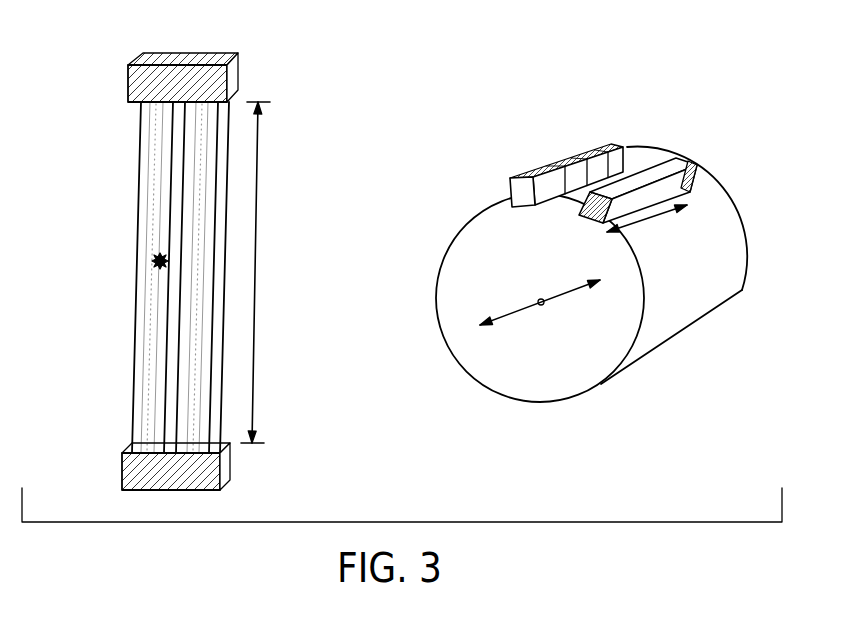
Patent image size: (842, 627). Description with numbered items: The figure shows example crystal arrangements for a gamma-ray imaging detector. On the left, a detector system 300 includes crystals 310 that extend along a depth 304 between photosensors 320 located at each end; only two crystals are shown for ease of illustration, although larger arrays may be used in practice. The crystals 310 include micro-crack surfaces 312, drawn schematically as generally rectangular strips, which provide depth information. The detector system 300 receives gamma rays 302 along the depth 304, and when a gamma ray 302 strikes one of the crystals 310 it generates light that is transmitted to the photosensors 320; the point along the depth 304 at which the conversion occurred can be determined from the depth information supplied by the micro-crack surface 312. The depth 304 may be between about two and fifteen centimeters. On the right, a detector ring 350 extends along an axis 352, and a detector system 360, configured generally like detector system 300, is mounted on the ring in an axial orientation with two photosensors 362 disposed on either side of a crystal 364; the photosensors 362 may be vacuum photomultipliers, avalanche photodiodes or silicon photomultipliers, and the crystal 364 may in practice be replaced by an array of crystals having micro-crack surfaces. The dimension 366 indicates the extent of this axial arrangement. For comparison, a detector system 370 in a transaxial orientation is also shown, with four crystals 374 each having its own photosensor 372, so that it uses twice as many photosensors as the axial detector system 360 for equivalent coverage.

The detector system 300 is at (179, 271).
The gamma rays 302 is at (168, 277).
The depth 304 is at (253, 290).
The crystals 310 is at (137, 178).
The micro-crack surfaces 312 is at (143, 287).
The photosensors 320 is at (238, 73).
The detector ring 350 is at (591, 275).
The axis 352 is at (517, 308).
The detector system 360 is at (640, 170).
The photosensors 362 is at (592, 220).
The crystal 364 is at (675, 193).
The gap between bars 366 is at (655, 232).
The detector system 370 is at (568, 157).
The photosensor 372 is at (549, 192).
The crystal 374 is at (522, 197).